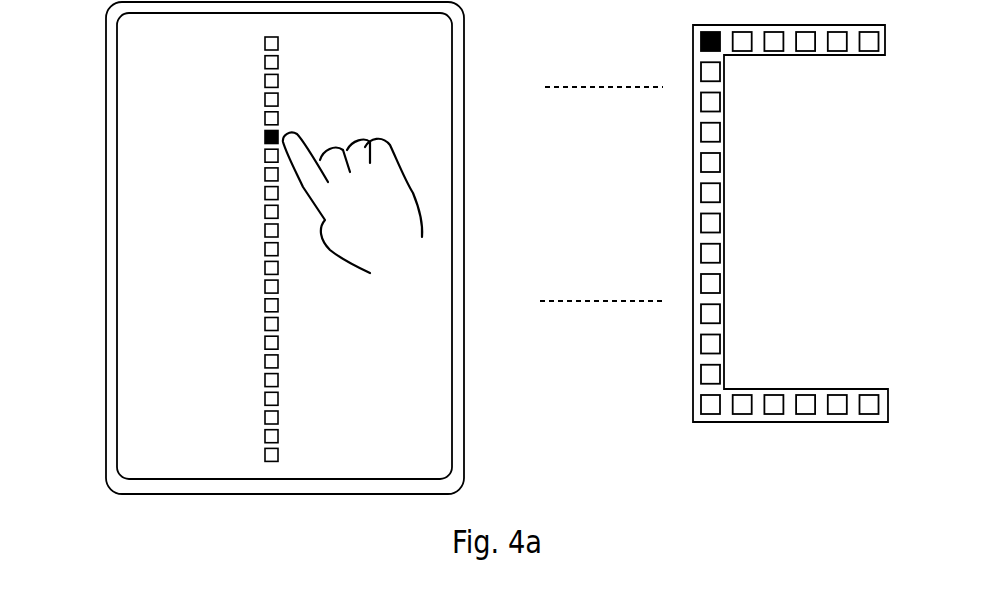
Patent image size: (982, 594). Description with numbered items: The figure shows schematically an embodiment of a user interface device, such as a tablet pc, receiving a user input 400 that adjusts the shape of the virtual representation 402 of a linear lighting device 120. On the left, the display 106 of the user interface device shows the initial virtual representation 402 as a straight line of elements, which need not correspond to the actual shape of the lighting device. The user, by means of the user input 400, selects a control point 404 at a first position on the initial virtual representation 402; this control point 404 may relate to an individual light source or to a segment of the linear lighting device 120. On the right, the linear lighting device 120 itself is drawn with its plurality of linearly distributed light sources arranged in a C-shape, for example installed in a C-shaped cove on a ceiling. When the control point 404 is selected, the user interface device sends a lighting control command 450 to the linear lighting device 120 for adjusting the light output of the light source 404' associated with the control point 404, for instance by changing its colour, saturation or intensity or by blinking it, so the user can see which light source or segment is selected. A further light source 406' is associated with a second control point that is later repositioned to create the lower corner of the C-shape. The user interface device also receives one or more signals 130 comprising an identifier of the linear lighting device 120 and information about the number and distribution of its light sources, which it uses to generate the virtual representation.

The display 106 is at (157, 437).
The virtual representation 402 is at (270, 62).
The control point 404 is at (210, 130).
The user input 400 is at (400, 178).
The linear lighting device 120 is at (703, 238).
The light source 404' is at (645, 35).
The light source 406' is at (646, 415).
The lighting control command 450 is at (593, 97).
The signals 130 is at (570, 307).